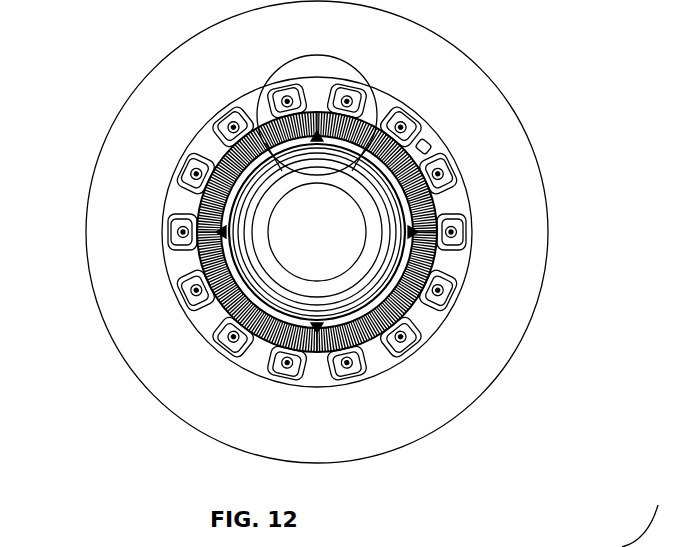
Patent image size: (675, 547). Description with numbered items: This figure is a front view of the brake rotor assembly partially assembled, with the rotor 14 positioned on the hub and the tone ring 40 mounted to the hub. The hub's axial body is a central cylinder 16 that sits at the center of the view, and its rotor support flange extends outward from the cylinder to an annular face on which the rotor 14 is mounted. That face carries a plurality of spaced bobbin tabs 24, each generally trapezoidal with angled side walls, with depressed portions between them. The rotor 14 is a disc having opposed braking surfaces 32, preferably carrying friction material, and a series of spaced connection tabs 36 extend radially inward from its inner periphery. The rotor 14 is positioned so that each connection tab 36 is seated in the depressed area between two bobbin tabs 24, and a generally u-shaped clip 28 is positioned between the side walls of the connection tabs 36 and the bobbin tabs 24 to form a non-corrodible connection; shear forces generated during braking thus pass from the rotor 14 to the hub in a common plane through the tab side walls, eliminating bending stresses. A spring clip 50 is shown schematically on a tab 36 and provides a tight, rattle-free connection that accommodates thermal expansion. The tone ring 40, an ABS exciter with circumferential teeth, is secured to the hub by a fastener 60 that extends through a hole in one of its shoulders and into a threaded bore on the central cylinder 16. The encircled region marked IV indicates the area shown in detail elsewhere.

The rotor 14 is at (545, 277).
The central cylinder 16 is at (407, 210).
The bobbin tabs 24 is at (193, 302).
The clip 28 is at (182, 257).
The braking surfaces 32 is at (488, 348).
The connection tabs 36 is at (375, 352).
The tone ring 40 is at (215, 142).
The spring clip 50 is at (425, 141).
The fastener 60 is at (220, 231).
The detail view IV is at (380, 105).